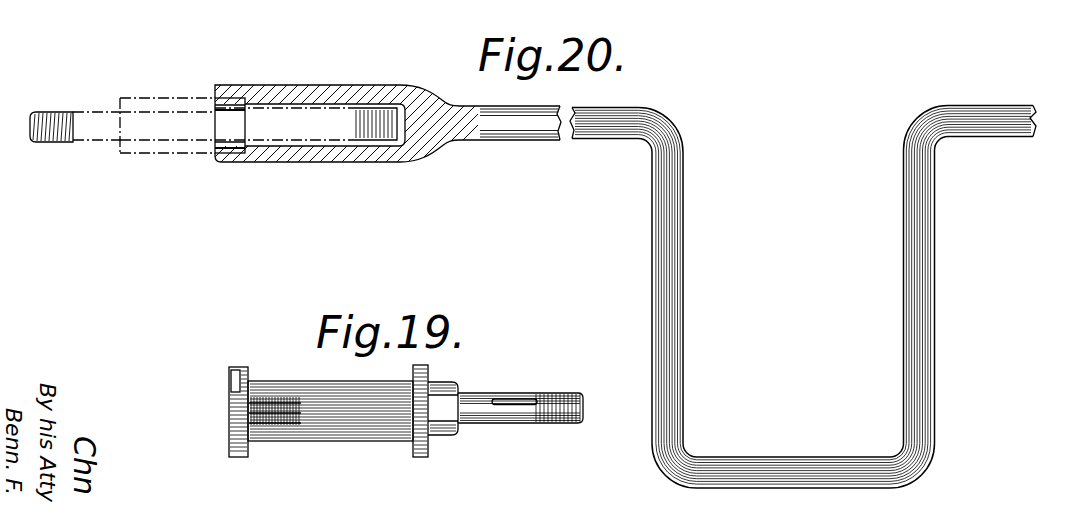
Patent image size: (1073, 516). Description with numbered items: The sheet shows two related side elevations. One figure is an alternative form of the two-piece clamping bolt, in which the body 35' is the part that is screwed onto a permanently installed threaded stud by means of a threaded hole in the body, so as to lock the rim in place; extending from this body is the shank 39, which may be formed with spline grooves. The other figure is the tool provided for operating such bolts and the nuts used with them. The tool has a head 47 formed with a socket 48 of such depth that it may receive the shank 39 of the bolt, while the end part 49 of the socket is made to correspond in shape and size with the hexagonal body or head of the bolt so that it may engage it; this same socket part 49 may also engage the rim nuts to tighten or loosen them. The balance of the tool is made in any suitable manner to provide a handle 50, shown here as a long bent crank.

In FIG. 20, the head 47 is at (340, 158).
In FIG. 20, the socket 48 is at (275, 140).
In FIG. 20, the end part of the socket 49 is at (214, 153).
In FIG. 20, the handle 50 is at (800, 460).
In FIG. 19, the body 35' is at (328, 425).
In FIG. 19, the shank 39 is at (485, 425).